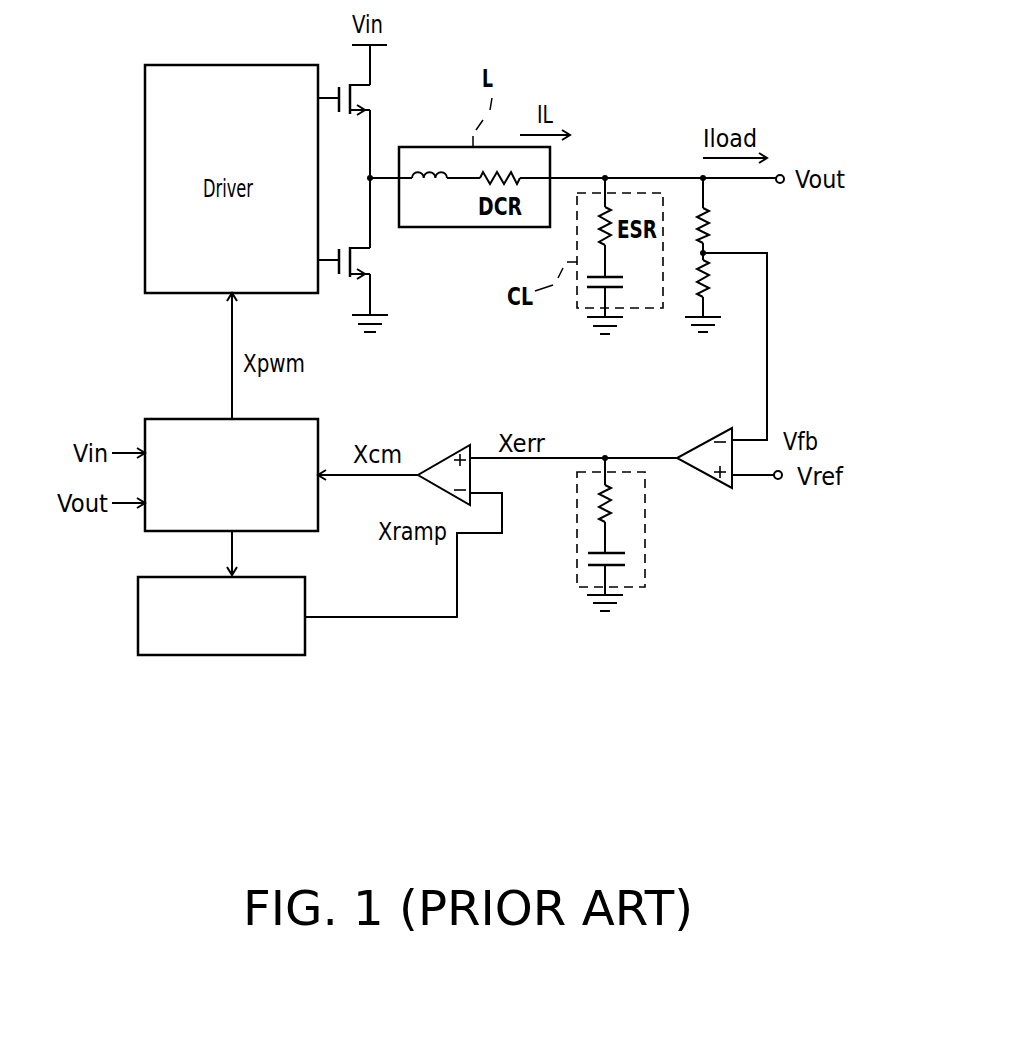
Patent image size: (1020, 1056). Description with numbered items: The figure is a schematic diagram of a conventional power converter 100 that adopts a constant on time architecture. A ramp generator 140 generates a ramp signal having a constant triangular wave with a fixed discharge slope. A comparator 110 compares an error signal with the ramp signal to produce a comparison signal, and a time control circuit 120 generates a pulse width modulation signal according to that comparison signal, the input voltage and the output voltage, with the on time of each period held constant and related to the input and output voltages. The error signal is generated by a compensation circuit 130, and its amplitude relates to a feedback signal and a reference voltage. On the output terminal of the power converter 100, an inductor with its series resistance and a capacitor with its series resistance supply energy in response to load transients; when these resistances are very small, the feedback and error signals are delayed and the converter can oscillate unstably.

The power converter 100 is at (740, 573).
The comparator 110 is at (439, 457).
The time control circuit 120 is at (300, 419).
The compensation circuit 130 is at (576, 542).
The ramp generator 140 is at (138, 617).